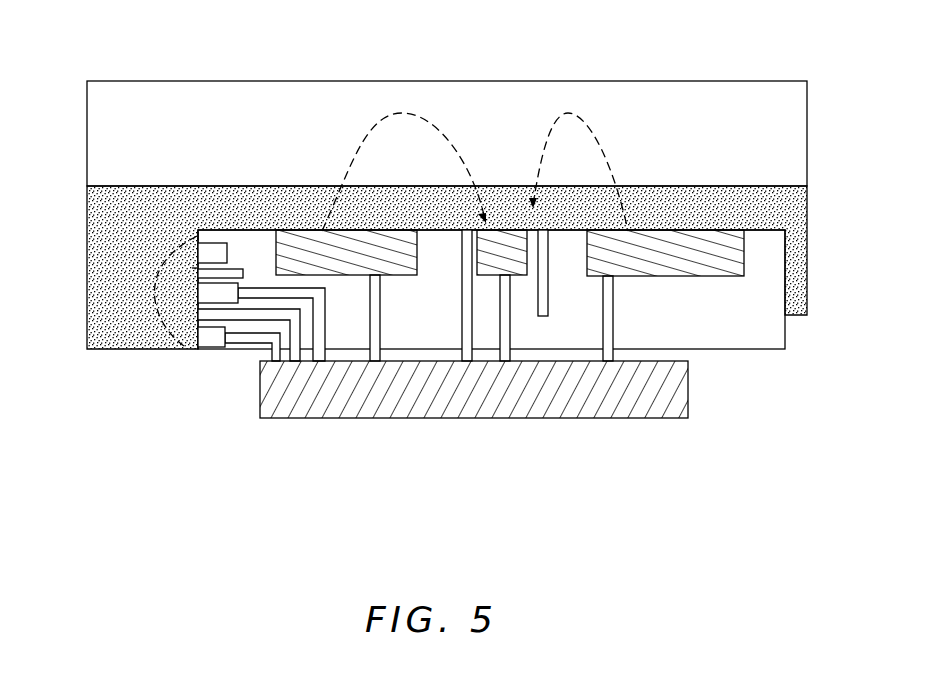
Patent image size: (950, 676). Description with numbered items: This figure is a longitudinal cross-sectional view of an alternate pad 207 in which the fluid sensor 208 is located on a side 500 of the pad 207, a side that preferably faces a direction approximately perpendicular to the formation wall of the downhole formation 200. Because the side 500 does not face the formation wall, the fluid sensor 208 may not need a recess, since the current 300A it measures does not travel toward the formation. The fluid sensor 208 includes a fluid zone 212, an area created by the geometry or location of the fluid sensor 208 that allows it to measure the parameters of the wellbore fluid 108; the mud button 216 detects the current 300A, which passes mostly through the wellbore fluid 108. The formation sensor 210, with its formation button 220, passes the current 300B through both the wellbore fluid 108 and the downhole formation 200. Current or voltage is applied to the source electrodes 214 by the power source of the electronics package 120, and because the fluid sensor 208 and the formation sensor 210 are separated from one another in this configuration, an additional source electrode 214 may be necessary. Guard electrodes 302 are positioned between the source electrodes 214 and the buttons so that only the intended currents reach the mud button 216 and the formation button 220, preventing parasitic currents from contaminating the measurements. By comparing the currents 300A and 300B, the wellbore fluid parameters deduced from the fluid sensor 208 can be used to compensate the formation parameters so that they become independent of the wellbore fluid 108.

The downhole formation 200 is at (807, 142).
The wellbore fluid 108 is at (807, 208).
The pad 207 is at (770, 341).
The source electrode 214 is at (228, 253).
The guard electrode 302 is at (461, 297).
The formation button 220 is at (497, 229).
The formation sensor 210 is at (522, 218).
The current 300B is at (379, 120).
The current 300A is at (160, 267).
The fluid zone 212 is at (152, 302).
The mud button 216 is at (188, 294).
The fluid sensor 208 is at (178, 304).
The side 500 is at (197, 234).
The electronics package 120 is at (590, 420).